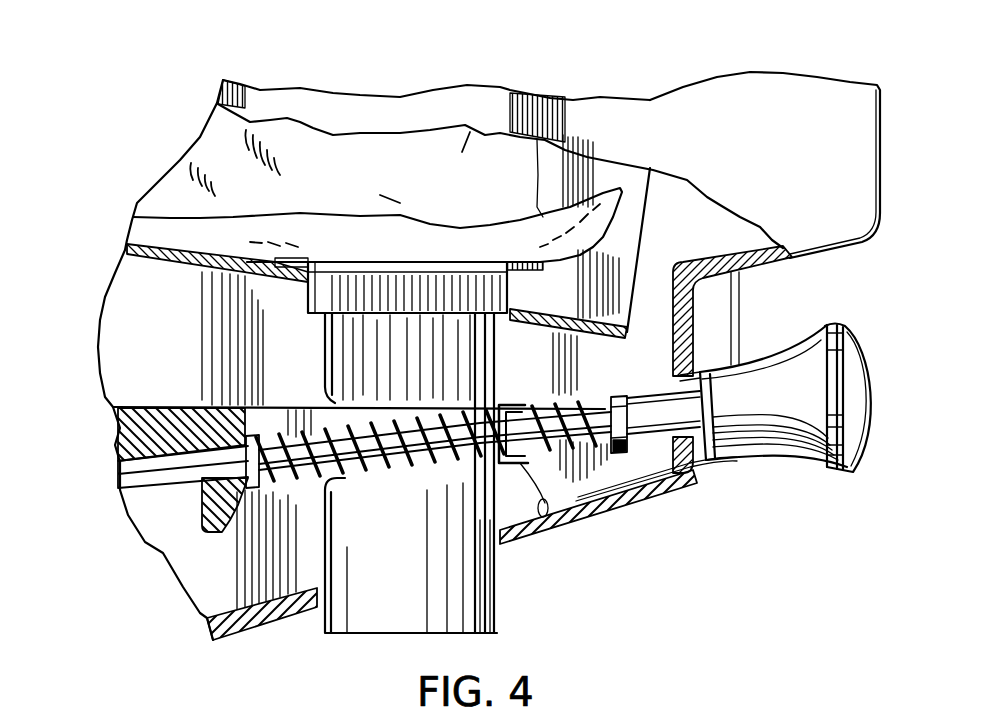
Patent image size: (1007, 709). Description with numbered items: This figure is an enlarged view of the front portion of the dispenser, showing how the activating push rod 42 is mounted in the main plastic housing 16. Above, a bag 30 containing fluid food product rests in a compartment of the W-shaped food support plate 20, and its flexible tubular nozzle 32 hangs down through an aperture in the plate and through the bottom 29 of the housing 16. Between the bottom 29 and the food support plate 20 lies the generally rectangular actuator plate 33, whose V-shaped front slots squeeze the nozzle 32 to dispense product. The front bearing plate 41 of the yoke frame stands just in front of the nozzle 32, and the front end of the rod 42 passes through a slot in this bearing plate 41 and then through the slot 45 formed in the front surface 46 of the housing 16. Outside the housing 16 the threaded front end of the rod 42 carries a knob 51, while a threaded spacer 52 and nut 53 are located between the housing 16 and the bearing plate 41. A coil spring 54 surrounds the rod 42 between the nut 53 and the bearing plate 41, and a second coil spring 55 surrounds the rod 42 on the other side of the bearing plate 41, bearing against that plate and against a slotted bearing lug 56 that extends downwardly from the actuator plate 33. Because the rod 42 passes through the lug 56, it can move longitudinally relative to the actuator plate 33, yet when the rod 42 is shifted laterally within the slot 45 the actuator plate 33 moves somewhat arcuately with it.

The main plastic housing 16 is at (796, 66).
The bag 30 is at (180, 187).
The food support plate 20 is at (157, 259).
The actuator plate 33 is at (153, 427).
The activating push rod 42 is at (115, 480).
The slotted bearing lug 56 is at (217, 503).
The coil spring 55 is at (330, 458).
The tubular valve or nozzle 32 is at (470, 602).
The front bearing plate 41 is at (543, 515).
The bottom 29 is at (548, 527).
The coil spring 54 is at (568, 448).
The nut 53 is at (627, 450).
The threaded spacer 52 is at (667, 440).
The knob 51 is at (825, 470).
The front surface 46 is at (695, 312).
The slot 45 is at (695, 382).